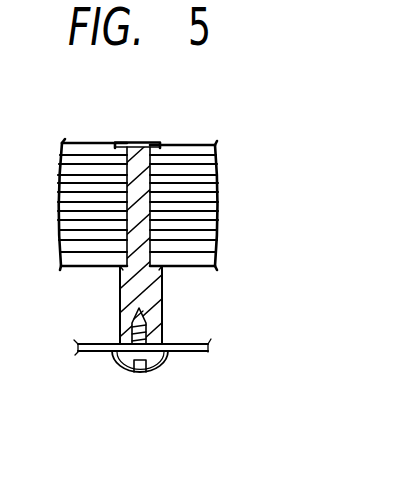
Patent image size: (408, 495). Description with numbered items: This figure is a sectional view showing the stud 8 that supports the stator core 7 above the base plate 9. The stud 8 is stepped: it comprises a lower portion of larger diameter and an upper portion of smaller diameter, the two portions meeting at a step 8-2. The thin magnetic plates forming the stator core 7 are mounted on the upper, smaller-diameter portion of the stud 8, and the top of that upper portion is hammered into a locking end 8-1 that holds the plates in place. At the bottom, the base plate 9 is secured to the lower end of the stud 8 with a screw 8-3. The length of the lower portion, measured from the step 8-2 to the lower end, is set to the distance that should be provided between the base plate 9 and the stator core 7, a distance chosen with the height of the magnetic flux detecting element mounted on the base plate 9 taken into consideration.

The stator core 7 is at (208, 202).
The stud 8 is at (153, 298).
The locking end 8-1 is at (152, 134).
The step 8-2 is at (120, 285).
The screw 8-3 is at (122, 368).
The base plate 9 is at (198, 355).